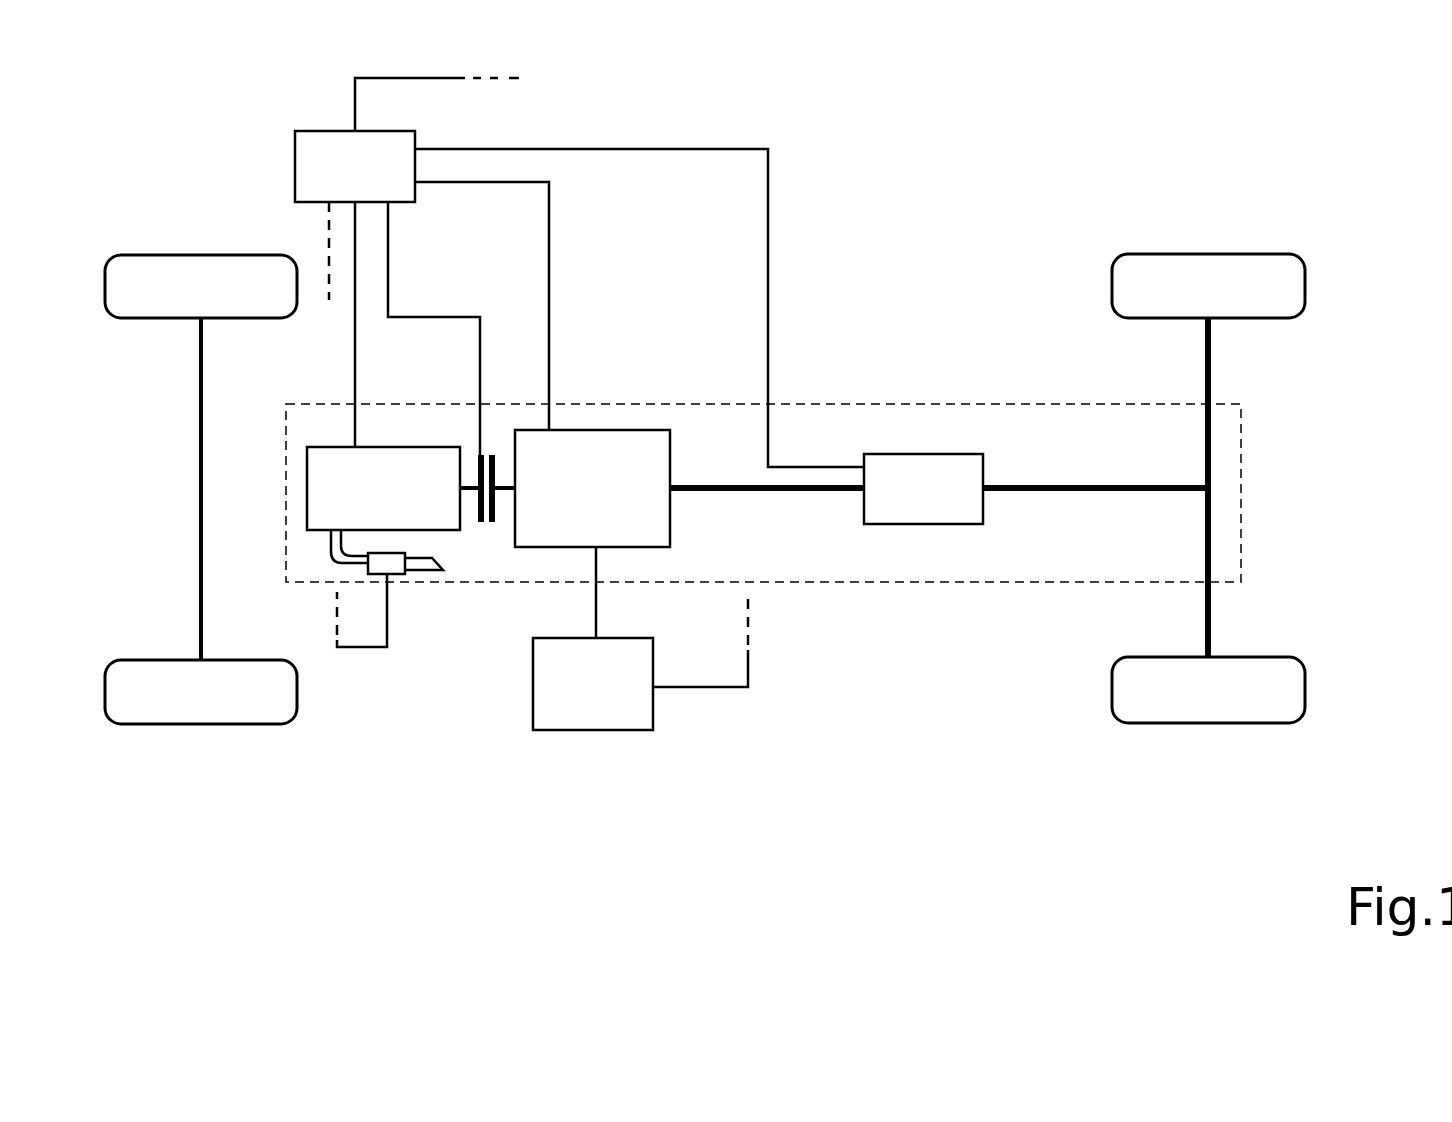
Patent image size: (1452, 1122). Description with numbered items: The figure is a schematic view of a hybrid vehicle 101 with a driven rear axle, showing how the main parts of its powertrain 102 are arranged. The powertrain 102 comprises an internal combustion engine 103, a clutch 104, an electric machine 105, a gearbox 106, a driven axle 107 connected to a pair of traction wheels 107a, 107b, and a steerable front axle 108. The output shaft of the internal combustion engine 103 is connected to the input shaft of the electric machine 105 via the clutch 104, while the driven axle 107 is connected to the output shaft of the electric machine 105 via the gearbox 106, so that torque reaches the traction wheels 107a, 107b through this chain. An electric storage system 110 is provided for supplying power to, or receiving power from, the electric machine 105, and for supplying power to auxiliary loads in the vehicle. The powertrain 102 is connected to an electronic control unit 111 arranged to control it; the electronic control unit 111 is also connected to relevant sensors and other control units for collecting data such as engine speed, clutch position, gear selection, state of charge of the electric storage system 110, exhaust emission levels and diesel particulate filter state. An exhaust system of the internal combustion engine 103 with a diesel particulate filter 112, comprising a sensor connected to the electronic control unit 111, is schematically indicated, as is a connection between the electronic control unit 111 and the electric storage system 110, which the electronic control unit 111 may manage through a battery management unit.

The hybrid vehicle 101 is at (787, 122).
The powertrain 102 is at (841, 404).
The internal combustion engine 103 is at (406, 501).
The clutch 104 is at (492, 522).
The electric machine 105 is at (614, 501).
The gearbox 106 is at (945, 501).
The driven axle 107 is at (1210, 548).
The traction wheel 107a is at (1225, 254).
The traction wheel 107b is at (1242, 723).
The steerable front axle 108 is at (201, 615).
The electric storage system 110 is at (615, 696).
The electronic control unit 111 is at (378, 178).
The diesel particulate filter 112 is at (397, 573).